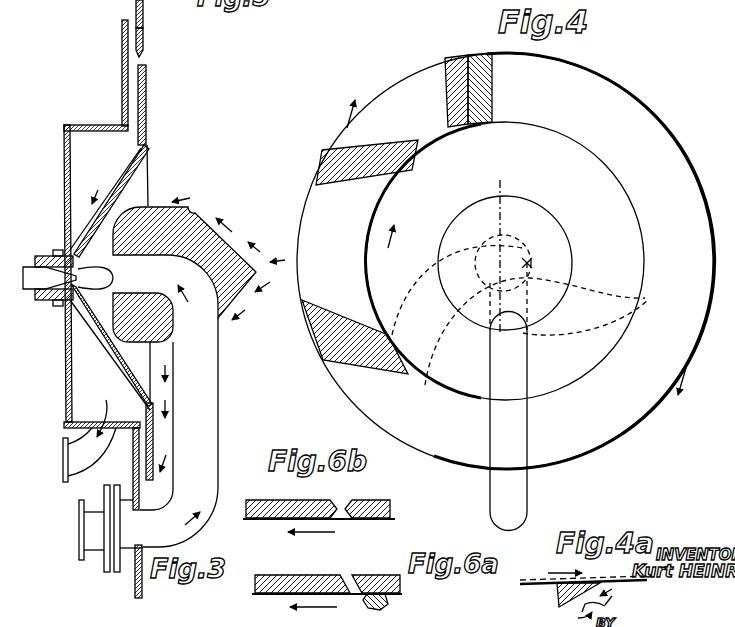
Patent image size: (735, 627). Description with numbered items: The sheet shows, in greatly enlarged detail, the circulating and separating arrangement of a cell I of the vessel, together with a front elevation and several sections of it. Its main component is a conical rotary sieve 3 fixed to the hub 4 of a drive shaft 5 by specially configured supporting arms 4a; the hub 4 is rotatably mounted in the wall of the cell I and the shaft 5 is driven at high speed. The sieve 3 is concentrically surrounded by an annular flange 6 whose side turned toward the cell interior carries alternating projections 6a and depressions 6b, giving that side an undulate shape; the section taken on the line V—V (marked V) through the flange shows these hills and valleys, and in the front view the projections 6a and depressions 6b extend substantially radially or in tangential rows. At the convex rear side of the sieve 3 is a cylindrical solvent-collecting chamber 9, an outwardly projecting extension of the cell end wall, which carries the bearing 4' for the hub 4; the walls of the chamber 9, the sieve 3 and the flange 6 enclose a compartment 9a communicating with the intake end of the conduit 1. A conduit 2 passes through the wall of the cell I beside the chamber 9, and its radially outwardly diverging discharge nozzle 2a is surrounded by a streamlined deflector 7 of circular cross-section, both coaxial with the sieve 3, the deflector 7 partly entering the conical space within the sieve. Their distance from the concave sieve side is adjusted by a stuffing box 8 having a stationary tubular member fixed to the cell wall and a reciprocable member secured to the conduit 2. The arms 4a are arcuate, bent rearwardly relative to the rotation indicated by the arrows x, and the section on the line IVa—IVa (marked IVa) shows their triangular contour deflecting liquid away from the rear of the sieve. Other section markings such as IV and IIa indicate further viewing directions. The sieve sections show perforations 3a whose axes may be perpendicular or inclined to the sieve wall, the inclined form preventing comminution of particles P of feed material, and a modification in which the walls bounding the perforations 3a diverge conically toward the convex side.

In FIG. 3, the conduit 1 is at (63, 458).
In FIG. 3, the conduit 2 is at (79, 535).
In FIG. 4, the conduit 2 is at (523, 362).
In FIG. 3, the discharge nozzle 2a is at (114, 271).
In FIG. 4, the discharge nozzle 2a is at (519, 255).
In FIG. 3, the rotary sieve 3 is at (107, 195).
In FIG. 4, the rotary sieve 3 is at (419, 248).
In FIG. 6B, the rotary sieve 3 is at (375, 500).
In FIG. 6A, the rotary sieve 3 is at (372, 575).
In FIG. 6B, the perforations 3a is at (290, 537).
In FIG. 6A, the perforations 3a is at (343, 567).
In FIG. 3, the hub 4 is at (54, 300).
In FIG. 3, the bearing 4' is at (47, 306).
In FIG. 3, the supporting arms 4a is at (126, 175).
In FIG. 4, the supporting arms 4a is at (416, 351).
In FIG. 4A, the supporting arms 4a is at (556, 597).
In FIG. 3, the drive shaft 5 is at (48, 296).
In FIG. 3, the annular flange 6 is at (147, 125).
In FIG. 4, the annular flange 6 is at (606, 437).
In FIG. 3, the projections 6a is at (144, 42).
In FIG. 4, the projections 6a is at (456, 58).
In FIG. 3, the depressions 6b is at (144, 15).
In FIG. 4, the depressions 6b is at (471, 56).
In FIG. 4, the deflector 7 is at (460, 312).
In FIG. 3, the stuffing box 8 is at (106, 562).
In FIG. 3, the solvent-collecting chamber 9 is at (72, 371).
In FIG. 3, the compartment 9a is at (102, 407).
In FIG. 3, the cell I is at (122, 40).
In FIG. 3, the section line IV is at (210, 156).
In FIG. 4, the section line IVa— IVa is at (462, 166).
In FIG. 4, the section line IIa is at (554, 156).
In FIG. 4, the section line V— V is at (447, 108).
In FIG. 4, the arrows X x is at (370, 418).
In FIG. 6A, the particles P is at (389, 602).